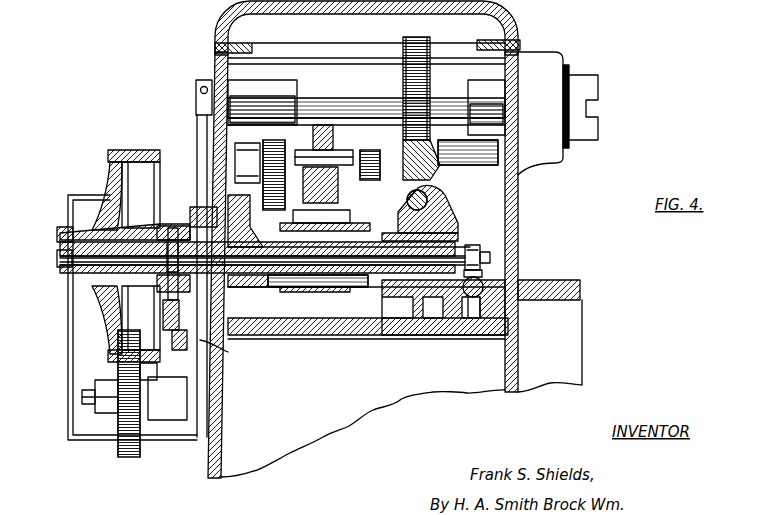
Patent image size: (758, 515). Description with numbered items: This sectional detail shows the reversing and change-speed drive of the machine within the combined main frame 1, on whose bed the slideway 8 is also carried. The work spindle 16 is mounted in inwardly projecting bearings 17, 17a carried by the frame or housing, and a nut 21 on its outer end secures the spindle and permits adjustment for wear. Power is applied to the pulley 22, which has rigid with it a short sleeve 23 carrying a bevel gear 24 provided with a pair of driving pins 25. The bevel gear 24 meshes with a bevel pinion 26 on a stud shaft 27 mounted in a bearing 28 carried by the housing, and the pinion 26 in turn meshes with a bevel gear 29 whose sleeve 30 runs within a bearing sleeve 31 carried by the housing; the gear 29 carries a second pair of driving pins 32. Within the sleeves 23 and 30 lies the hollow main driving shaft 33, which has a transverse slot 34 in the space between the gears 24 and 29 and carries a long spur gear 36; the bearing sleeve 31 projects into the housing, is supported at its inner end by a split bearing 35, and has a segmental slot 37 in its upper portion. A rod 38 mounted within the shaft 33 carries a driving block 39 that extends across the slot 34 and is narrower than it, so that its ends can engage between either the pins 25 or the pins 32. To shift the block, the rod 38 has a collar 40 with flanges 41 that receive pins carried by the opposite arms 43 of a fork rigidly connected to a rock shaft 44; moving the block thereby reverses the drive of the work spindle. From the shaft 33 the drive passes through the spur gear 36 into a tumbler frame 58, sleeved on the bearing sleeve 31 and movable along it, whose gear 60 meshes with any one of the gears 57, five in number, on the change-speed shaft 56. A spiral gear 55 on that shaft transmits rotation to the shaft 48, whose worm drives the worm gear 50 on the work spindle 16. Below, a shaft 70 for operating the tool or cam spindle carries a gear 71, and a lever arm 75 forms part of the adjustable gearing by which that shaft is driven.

The combined main frame 1 is at (223, 444).
The slideway 8 is at (555, 280).
The work spindle 16 is at (352, 96).
The bearing 17 is at (268, 118).
The bearing 17a is at (486, 107).
The nut 21 is at (196, 100).
The pulley 22 is at (150, 147).
The short sleeve 23 is at (58, 250).
The bevel gear 24 is at (160, 233).
The driving pins 25 is at (167, 228).
The bevel pinion 26 is at (170, 302).
The stud shaft 27 is at (126, 324).
The bearing 28 is at (222, 348).
The bevel gear 29 is at (240, 232).
The sleeve 30 is at (240, 245).
The bearing sleeve 31 is at (378, 322).
The driving pins 32 is at (200, 207).
The hollow main driving shaft 33 is at (60, 290).
The transverse slot 34 is at (248, 292).
The split bearing 35 is at (412, 322).
The long spur gear 36 is at (305, 288).
The segmental slot 37 is at (380, 232).
The rod 38 is at (340, 292).
The driving block 39 is at (173, 243).
The collar 40 is at (480, 250).
The flanges 41 is at (490, 258).
The fork arms 43 is at (482, 272).
The rock shaft 44 is at (478, 292).
The shaft 48 is at (428, 195).
The worm gear 50 is at (430, 70).
The spiral gear 55 is at (445, 160).
The change-speed shaft 56 is at (370, 150).
The gears 57 is at (283, 125).
The tumbler frame 58 is at (300, 210).
The gear 60 is at (330, 125).
The shaft 70 is at (82, 402).
The gear 71 is at (118, 452).
The lever arm 75 is at (178, 352).